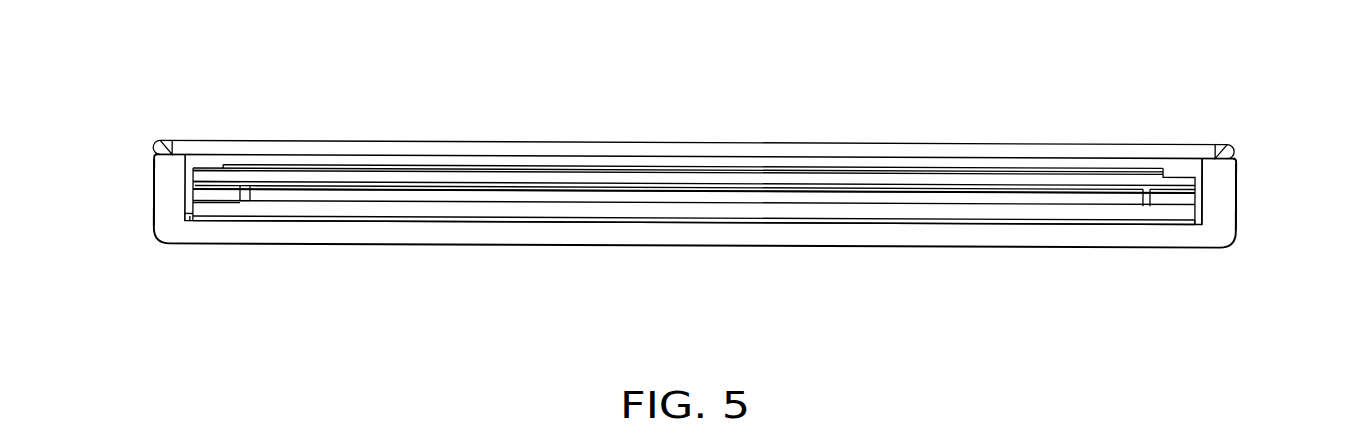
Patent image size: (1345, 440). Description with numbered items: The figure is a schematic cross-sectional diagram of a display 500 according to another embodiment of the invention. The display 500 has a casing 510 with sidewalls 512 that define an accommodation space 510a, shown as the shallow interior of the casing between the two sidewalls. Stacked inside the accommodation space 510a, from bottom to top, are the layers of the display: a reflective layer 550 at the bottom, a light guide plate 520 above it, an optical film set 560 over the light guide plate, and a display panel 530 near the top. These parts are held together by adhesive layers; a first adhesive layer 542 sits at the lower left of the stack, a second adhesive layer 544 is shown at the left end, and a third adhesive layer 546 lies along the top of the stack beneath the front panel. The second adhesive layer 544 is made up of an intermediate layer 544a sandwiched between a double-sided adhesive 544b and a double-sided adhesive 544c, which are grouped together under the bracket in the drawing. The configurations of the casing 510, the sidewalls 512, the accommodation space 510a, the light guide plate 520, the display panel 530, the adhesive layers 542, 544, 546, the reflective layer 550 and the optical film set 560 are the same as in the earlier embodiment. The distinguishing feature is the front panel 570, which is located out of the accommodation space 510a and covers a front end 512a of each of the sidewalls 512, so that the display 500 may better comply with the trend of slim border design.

The display 500 is at (694, 174).
The casing 510 is at (852, 237).
The accommodation space 510a is at (1187, 162).
The sidewalls 512 is at (160, 172).
The front end 512a is at (166, 149).
The light guide plate 520 is at (638, 213).
The display panel 530 is at (765, 180).
The first adhesive layer 542 is at (213, 221).
The second adhesive layer 544 is at (254, 113).
The intermediate layer 544a is at (226, 190).
The double-sided adhesive 544b is at (207, 181).
The double-sided adhesive 544c is at (288, 135).
The third adhesive layer 546 is at (855, 162).
The reflective layer 550 is at (537, 221).
The optical film set 560 is at (462, 198).
The front panel 570 is at (1075, 150).